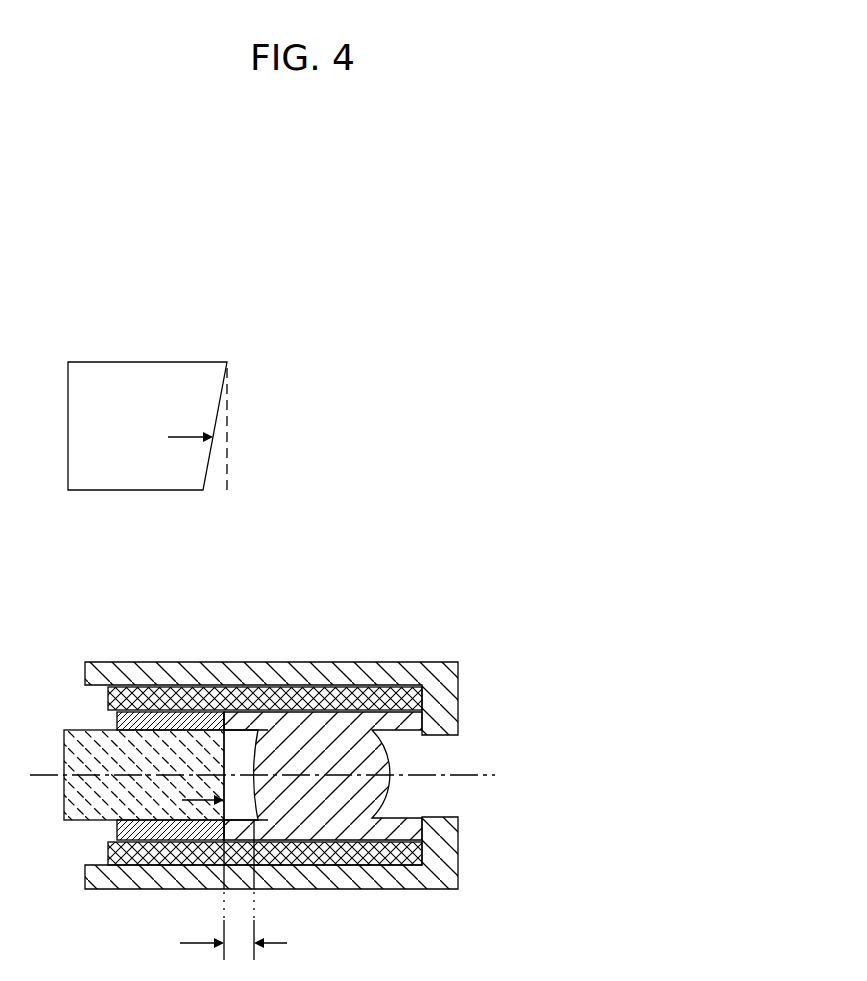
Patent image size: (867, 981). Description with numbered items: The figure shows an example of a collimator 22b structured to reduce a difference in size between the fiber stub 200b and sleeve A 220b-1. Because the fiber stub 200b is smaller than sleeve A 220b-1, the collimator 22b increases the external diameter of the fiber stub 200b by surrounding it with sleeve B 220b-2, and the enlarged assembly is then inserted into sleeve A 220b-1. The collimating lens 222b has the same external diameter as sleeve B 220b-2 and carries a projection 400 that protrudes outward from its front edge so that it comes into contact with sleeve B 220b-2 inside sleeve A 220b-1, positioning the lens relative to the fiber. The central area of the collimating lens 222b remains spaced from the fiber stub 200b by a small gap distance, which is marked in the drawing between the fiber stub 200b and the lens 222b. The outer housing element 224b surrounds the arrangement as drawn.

The collimator 22b is at (366, 324).
The fiber stub 200b is at (146, 752).
The projection 400 is at (246, 736).
The sleeve A 220b-1 is at (340, 702).
The sleeve B 220b-2 is at (130, 853).
The collimating lens 222b is at (343, 800).
The housing 224b is at (445, 862).